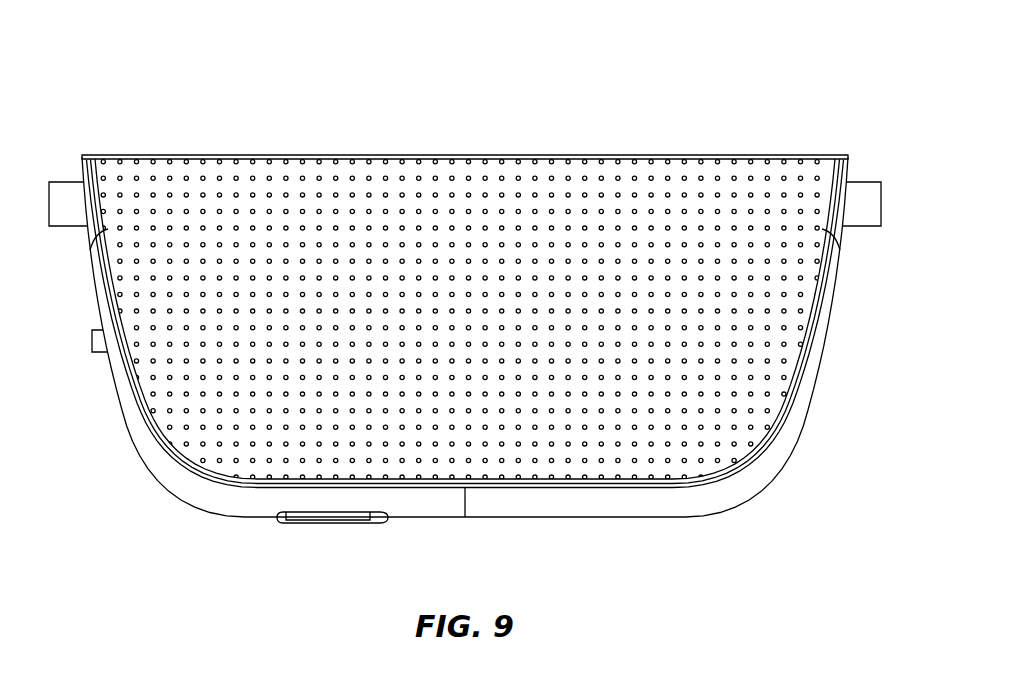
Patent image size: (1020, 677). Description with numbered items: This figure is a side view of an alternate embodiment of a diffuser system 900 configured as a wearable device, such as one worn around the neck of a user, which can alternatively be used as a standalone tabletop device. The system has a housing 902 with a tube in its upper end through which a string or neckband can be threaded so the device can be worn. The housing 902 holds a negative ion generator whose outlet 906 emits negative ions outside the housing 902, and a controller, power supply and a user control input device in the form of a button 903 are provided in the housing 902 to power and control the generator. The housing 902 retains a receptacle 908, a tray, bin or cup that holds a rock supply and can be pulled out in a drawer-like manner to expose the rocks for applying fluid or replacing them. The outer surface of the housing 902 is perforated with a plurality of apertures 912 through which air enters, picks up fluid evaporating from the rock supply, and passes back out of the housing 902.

The diffuser system 900 is at (781, 104).
The housing 902 is at (793, 395).
The button 903 is at (322, 525).
The outlet 906 is at (100, 353).
The receptacle 908 is at (623, 522).
The apertures 912 is at (684, 413).